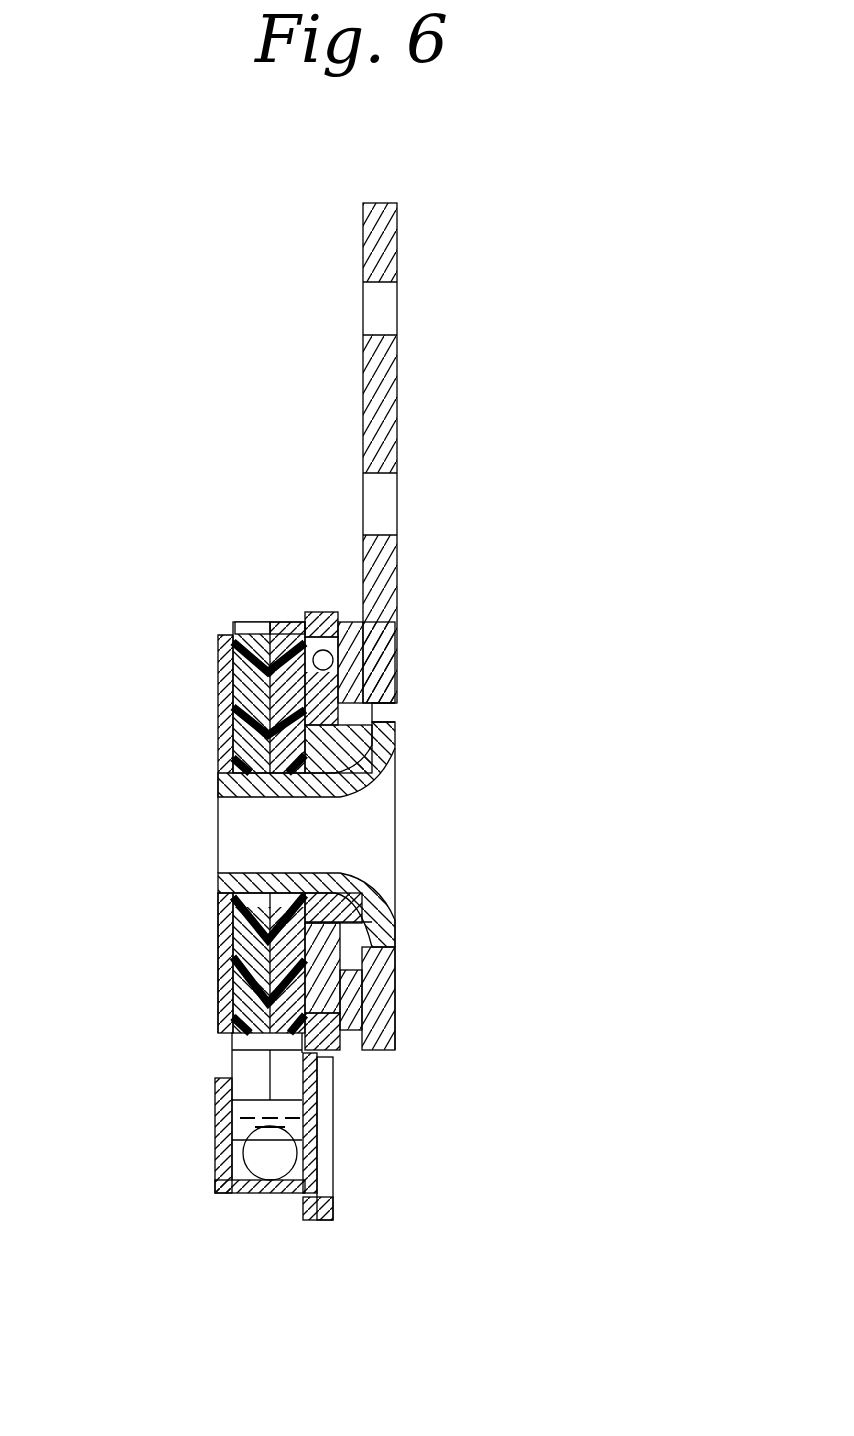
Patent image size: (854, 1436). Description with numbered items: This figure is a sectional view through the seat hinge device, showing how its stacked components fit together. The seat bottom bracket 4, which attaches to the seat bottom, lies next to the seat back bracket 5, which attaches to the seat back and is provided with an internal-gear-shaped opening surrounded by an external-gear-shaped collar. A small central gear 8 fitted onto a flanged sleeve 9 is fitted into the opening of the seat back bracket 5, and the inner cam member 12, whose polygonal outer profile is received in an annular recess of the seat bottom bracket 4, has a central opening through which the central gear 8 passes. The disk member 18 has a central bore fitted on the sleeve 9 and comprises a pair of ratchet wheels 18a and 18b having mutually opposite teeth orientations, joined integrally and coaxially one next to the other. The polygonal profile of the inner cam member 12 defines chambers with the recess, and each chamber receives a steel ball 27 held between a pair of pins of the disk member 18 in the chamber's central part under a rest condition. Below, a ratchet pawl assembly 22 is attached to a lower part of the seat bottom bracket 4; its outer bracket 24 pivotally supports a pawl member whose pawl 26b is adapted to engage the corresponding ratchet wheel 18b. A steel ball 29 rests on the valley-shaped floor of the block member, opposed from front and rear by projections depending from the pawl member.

The seat bottom bracket 4 is at (338, 623).
The seat back bracket 5 is at (388, 393).
The central gear 8 is at (393, 785).
The flanged sleeve 9 is at (392, 738).
The inner cam member 12 is at (233, 710).
The disk member 18 is at (207, 616).
The ratchet wheel 18a is at (250, 620).
The ratchet wheel 18b is at (293, 620).
The ratchet pawl assembly 22 is at (258, 1146).
The outer bracket 24 is at (215, 1143).
The pawl 26b is at (285, 1090).
The steel ball 27 is at (235, 663).
The steel ball 29 is at (270, 1170).